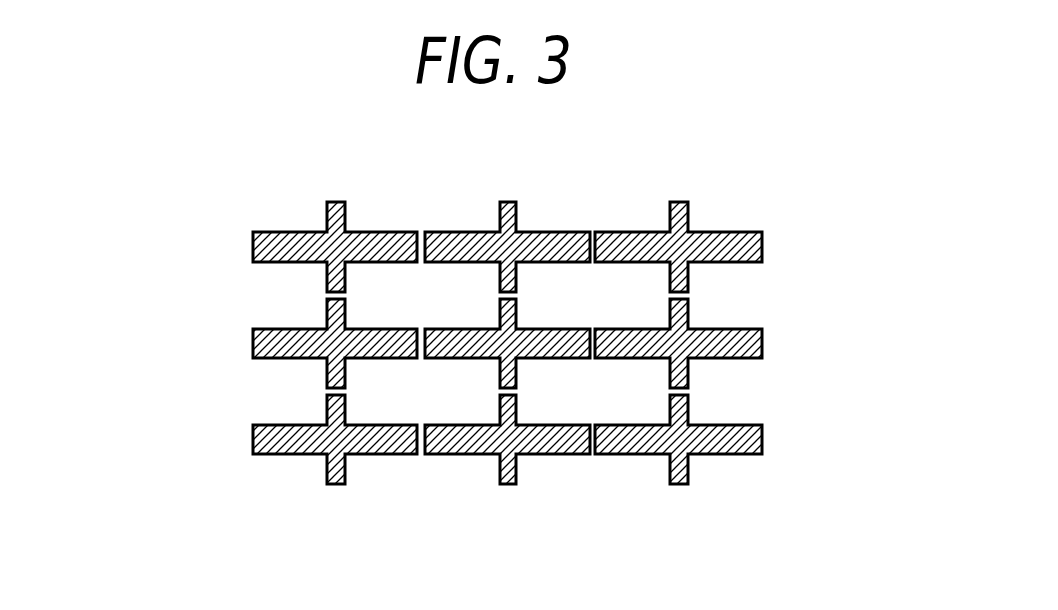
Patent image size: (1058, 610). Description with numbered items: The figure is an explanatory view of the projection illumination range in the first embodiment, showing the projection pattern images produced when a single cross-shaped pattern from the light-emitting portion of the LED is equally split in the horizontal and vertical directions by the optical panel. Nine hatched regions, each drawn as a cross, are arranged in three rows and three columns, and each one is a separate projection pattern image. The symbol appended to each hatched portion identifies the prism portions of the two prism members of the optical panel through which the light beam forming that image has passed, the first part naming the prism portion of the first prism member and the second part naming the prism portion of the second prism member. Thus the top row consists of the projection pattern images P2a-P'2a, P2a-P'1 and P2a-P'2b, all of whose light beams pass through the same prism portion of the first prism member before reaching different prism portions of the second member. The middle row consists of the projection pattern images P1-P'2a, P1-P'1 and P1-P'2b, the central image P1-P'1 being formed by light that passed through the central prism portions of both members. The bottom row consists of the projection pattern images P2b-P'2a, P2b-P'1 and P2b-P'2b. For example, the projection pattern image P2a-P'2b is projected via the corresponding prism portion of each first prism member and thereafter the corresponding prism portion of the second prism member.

The projection pattern image P2a-P'2a is at (240, 247).
The projection pattern image P2a-P'1 is at (517, 218).
The projection pattern image P2a-P'2b is at (765, 247).
The projection pattern image P1-P'2a is at (240, 343).
The projection pattern image P1-P'1 is at (525, 419).
The projection pattern image P1-P'2b is at (757, 343).
The projection pattern image P2b-P'2a is at (240, 439).
The projection pattern image P2b-P'1 is at (481, 475).
The projection pattern image P2b-P'2b is at (765, 439).